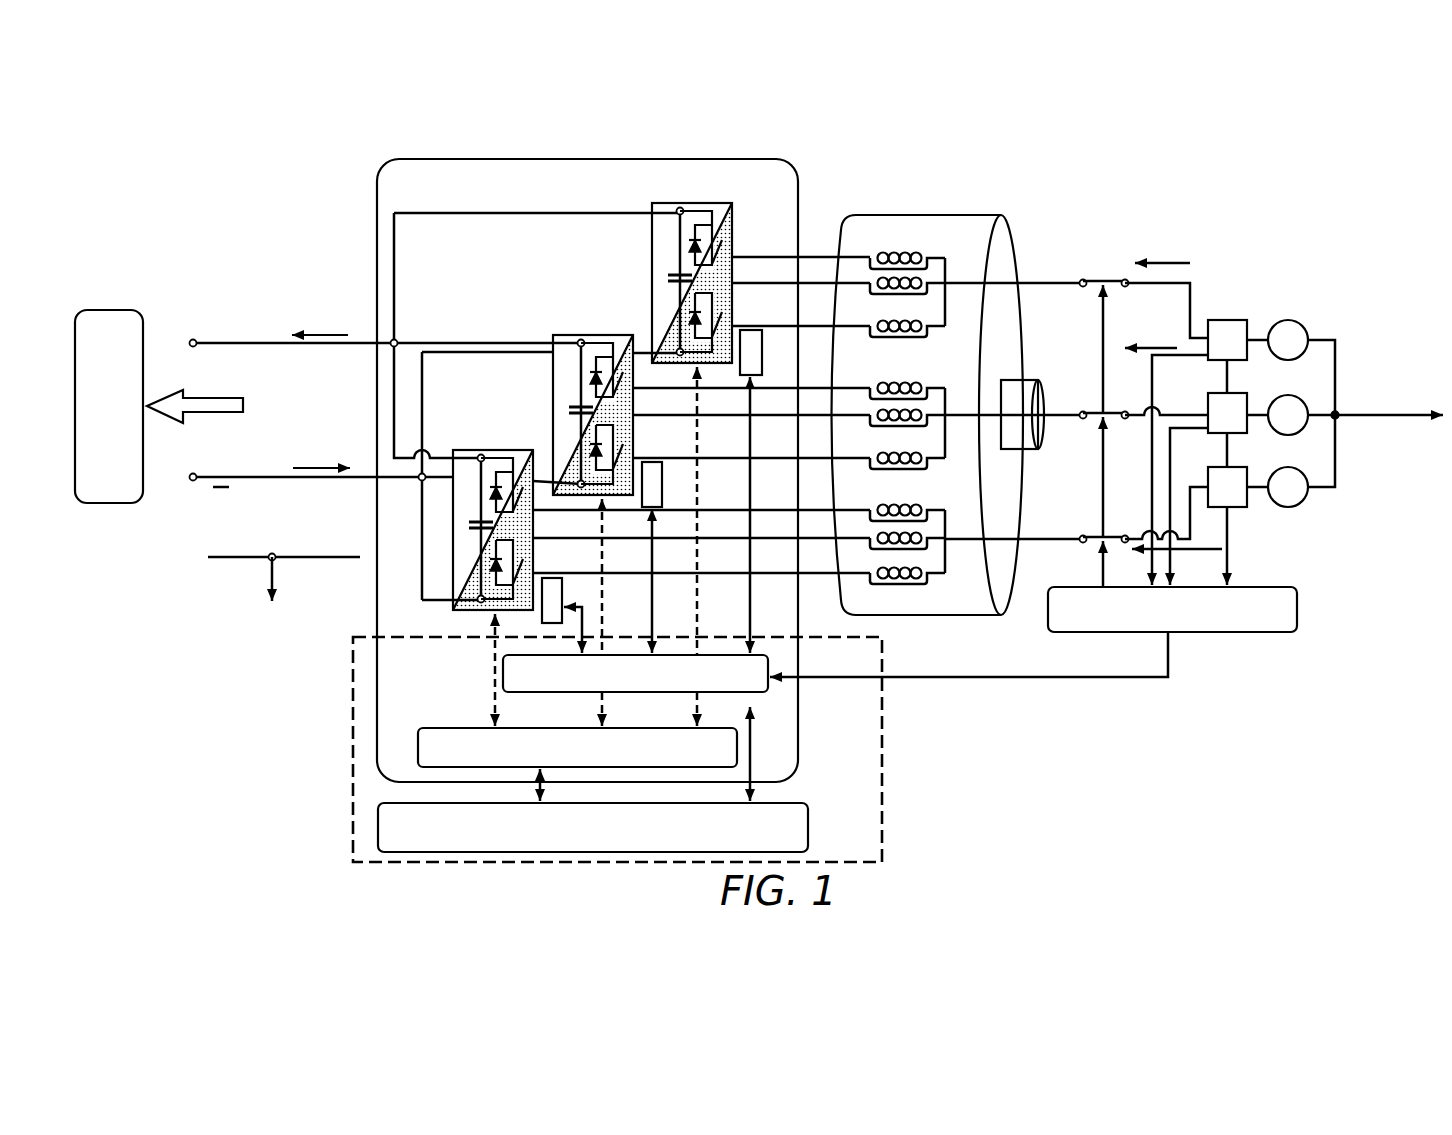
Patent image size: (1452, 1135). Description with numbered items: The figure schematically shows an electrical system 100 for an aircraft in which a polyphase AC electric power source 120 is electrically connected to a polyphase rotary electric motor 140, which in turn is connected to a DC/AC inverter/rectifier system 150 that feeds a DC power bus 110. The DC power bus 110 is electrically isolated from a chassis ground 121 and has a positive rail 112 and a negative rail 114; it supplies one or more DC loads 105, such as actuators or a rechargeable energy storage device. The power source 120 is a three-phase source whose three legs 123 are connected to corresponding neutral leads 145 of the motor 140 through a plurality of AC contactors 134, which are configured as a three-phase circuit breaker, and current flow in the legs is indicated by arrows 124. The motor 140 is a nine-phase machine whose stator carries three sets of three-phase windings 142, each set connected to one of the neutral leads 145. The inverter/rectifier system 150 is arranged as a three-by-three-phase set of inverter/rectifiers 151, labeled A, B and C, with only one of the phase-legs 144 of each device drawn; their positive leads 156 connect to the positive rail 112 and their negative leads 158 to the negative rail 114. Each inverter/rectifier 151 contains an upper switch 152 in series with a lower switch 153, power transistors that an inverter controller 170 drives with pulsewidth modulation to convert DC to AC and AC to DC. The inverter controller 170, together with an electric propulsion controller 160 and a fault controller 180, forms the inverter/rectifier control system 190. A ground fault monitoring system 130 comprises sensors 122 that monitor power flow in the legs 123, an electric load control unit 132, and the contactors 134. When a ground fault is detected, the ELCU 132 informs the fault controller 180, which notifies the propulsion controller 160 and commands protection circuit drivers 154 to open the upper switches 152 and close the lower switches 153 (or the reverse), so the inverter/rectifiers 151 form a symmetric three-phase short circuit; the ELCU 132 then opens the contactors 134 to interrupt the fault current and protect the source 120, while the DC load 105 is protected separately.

The electrical system 100 is at (300, 176).
The DC load 105 is at (130, 421).
The DC power bus 110 is at (338, 421).
The positive rail 112 is at (241, 313).
The negative rail 114 is at (241, 523).
The polyphase AC electric power source 120 is at (1349, 342).
The chassis ground 121 is at (296, 633).
The sensors 122 is at (1227, 373).
The legs 123 is at (1253, 342).
The current flow 124 is at (1183, 254).
The ground fault monitoring system 130 is at (1184, 651).
The electric load control unit (ELCU) 132 is at (1268, 621).
The AC contactors 134 is at (1094, 279).
The polyphase rotary electric motor 140 is at (979, 623).
The 3-phase windings 142 is at (921, 247).
The phase-legs 144 is at (822, 326).
The neutral leads 145 is at (1043, 281).
The DC/AC inverter/rectifier system 150 is at (417, 154).
The inverter/rectifiers 151 is at (717, 202).
The upper switch 152 is at (716, 250).
The lower switch 153 is at (716, 306).
The protection circuit drivers 154 is at (762, 376).
The positive leads 156 is at (549, 212).
The negative leads 158 is at (497, 354).
The electric propulsion controller 160 is at (801, 843).
The inverter controller 170 is at (731, 764).
The fault controller 180 is at (758, 690).
The inverter/rectifier control system 190 is at (869, 853).